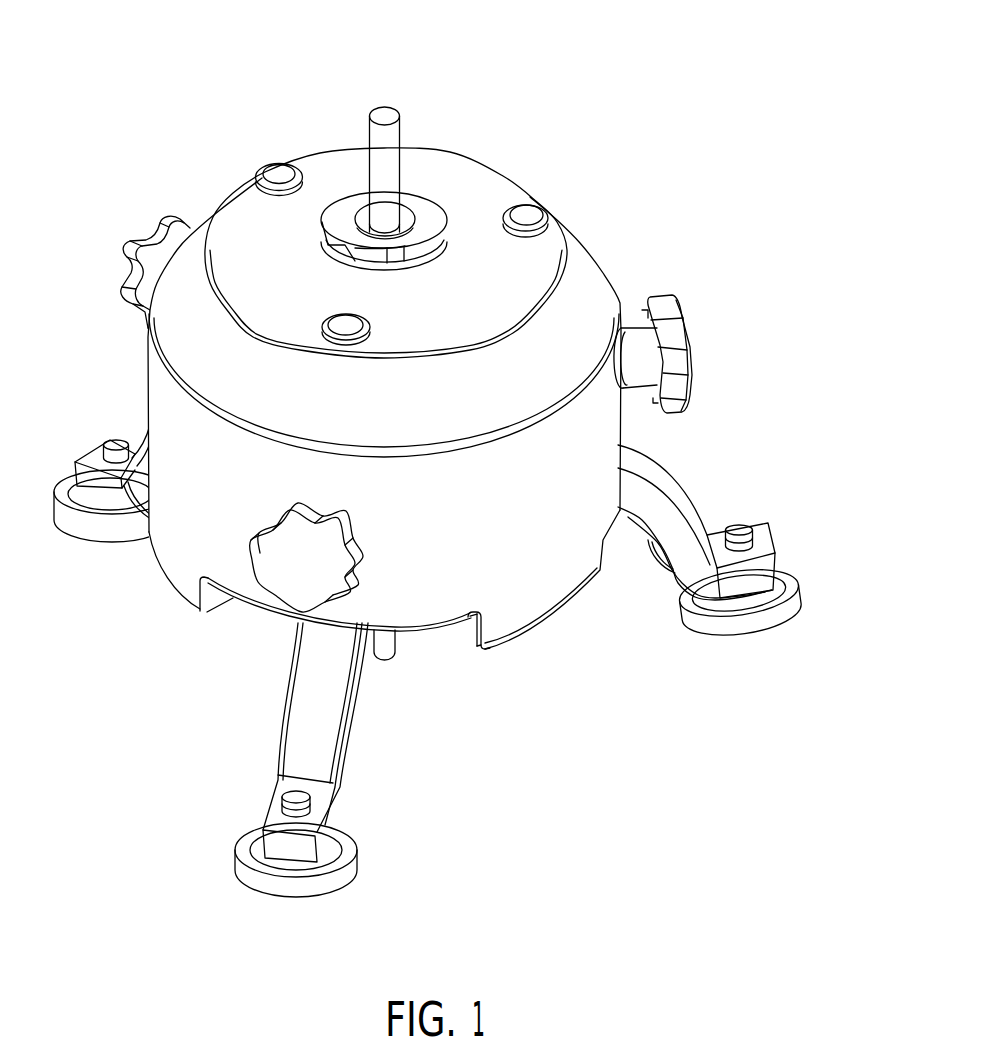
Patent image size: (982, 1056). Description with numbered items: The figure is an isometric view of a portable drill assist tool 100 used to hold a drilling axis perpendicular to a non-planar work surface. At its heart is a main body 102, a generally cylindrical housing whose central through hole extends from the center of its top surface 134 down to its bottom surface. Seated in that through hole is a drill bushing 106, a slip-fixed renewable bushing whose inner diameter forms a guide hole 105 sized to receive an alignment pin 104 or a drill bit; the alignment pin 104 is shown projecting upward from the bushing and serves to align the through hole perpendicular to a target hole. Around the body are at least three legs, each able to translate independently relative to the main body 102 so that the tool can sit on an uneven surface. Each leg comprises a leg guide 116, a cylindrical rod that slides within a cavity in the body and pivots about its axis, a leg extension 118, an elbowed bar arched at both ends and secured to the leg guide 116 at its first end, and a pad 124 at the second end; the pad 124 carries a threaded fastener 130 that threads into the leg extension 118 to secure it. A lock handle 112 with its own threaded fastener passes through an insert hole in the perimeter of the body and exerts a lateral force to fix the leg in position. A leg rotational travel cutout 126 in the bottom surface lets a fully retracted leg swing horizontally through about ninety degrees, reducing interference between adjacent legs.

The portable drill assist tool 100 is at (714, 86).
The main body 102 is at (597, 277).
The alignment pin 104 is at (380, 141).
The guide hole 105 is at (362, 216).
The drill bushing 106 is at (413, 202).
The lock handle 112 is at (685, 353).
The leg guide 116 is at (535, 210).
The leg extension 118 is at (292, 718).
The pad 124 is at (248, 858).
The leg rotational travel cutout 126 is at (463, 628).
The threaded fastener 130 is at (745, 528).
The top surface 134 is at (237, 202).